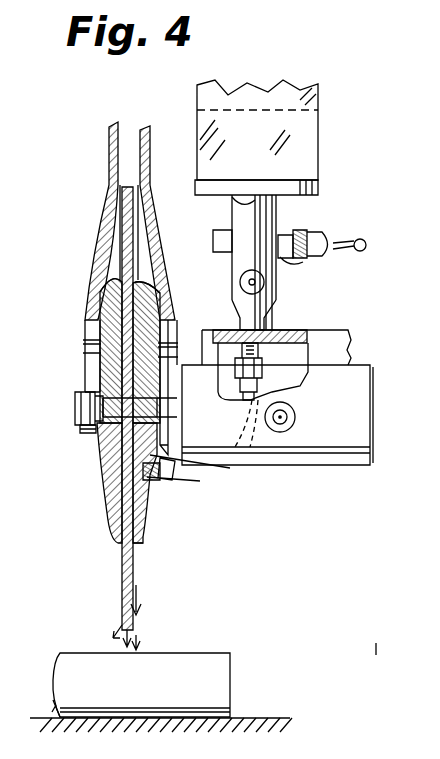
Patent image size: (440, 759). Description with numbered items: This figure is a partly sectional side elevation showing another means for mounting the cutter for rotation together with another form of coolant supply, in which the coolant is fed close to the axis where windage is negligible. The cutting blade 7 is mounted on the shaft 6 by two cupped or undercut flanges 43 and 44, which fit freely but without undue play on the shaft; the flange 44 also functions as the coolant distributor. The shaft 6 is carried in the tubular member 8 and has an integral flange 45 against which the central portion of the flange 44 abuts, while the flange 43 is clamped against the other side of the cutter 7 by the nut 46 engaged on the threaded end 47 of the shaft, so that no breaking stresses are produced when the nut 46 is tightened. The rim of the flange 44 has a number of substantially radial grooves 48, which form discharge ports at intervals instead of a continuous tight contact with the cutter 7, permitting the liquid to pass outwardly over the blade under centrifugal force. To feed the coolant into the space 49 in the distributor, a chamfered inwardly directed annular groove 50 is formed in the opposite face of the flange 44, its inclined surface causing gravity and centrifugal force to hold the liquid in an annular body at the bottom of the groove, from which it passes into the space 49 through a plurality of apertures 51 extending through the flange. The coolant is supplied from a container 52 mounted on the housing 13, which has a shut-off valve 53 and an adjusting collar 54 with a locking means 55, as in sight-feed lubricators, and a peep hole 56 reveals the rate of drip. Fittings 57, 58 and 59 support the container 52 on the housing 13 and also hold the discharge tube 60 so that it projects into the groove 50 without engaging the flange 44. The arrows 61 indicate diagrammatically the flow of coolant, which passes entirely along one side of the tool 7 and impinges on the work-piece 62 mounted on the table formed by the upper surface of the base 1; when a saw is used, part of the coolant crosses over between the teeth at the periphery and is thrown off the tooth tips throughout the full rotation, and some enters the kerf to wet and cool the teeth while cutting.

The base 1 is at (263, 722).
The shaft 6 is at (97, 443).
The cutting blade 7 is at (118, 573).
The tube 8 is at (153, 239).
The housing 13 is at (347, 466).
The flange 43 is at (113, 495).
The flange 44 is at (152, 517).
The integral flange 45 is at (113, 412).
The nut 46 is at (83, 433).
The threaded end 47 is at (71, 397).
The radial grooves 48 is at (138, 542).
The space 49 is at (135, 318).
The annular groove 50 is at (170, 345).
The apertures 51 is at (153, 490).
The container 52 is at (311, 132).
The shut-off valve 53 is at (328, 237).
The adjusting collar 54 is at (297, 232).
The locking means 55 is at (302, 265).
The peep hole 56 is at (262, 287).
The fitting 57 is at (273, 323).
The fitting 58 is at (262, 363).
The fitting 59 is at (280, 390).
The discharge tube 60 is at (185, 472).
The arrows 61 is at (132, 602).
The work-piece 62 is at (203, 660).